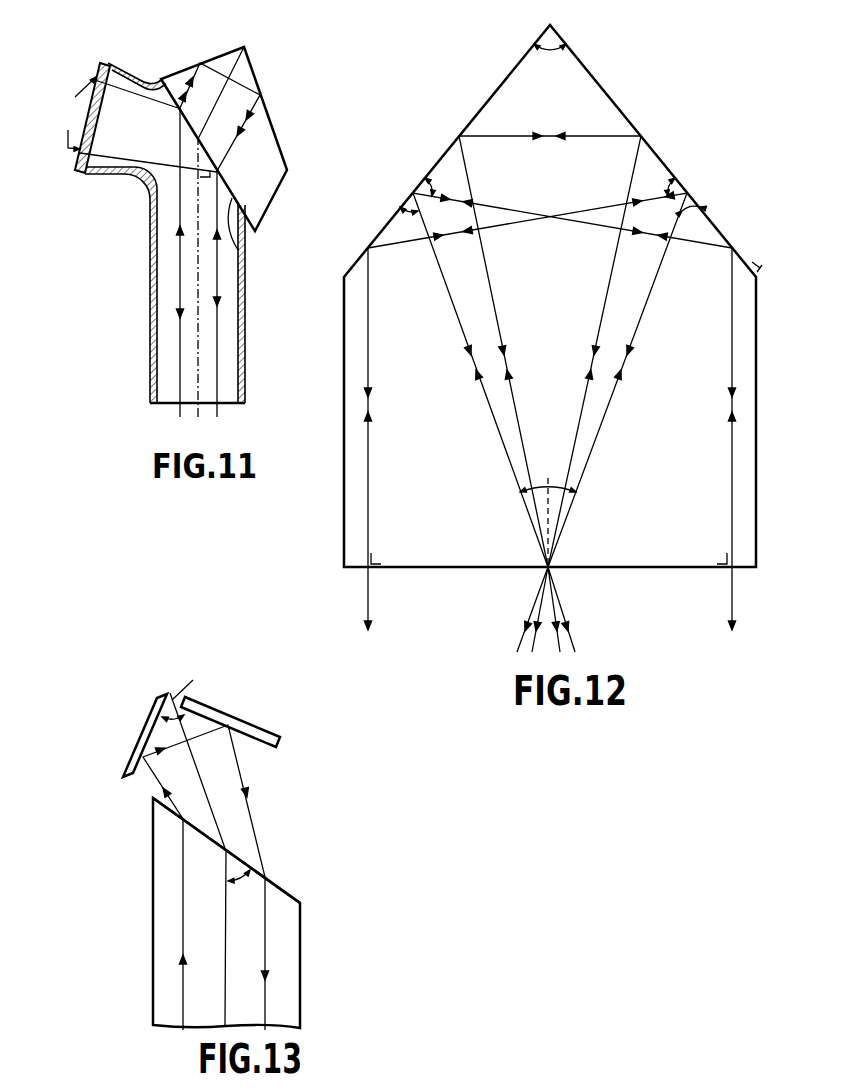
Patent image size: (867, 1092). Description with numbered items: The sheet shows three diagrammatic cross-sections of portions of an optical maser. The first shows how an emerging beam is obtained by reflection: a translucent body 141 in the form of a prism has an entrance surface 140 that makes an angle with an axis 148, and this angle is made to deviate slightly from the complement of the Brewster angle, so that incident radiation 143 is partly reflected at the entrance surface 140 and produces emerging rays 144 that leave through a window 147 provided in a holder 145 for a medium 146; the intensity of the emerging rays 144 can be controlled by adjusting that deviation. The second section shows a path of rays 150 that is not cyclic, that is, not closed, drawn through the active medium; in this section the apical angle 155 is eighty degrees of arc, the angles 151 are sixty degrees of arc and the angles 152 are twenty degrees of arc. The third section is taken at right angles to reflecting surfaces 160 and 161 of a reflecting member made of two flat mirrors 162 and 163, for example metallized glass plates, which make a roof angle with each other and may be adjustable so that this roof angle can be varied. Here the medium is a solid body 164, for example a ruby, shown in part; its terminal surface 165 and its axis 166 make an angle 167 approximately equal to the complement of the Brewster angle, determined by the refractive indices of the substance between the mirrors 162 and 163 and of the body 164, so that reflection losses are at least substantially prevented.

In FIG. 11, the entrance surface 140 is at (243, 242).
In FIG. 11, the translucent body 141 is at (273, 166).
In FIG. 11, the incident radiation 143 is at (178, 229).
In FIG. 11, the emerging rays 144 is at (75, 114).
In FIG. 11, the holder 145 is at (155, 329).
In FIG. 11, the medium 146 is at (168, 282).
In FIG. 11, the window 147 is at (102, 69).
In FIG. 11, the axis 148 is at (197, 357).
In FIG. 12, the path of rays 150 is at (732, 353).
In FIG. 12, the angles 151 is at (412, 213).
In FIG. 12, the angles 152 is at (556, 490).
In FIG. 12, the apical angle 155 is at (557, 33).
In FIG. 13, the reflecting surface 160 is at (137, 778).
In FIG. 13, the reflecting surface 161 is at (263, 744).
In FIG. 13, the mirror 162 is at (158, 712).
In FIG. 13, the mirror 163 is at (253, 725).
In FIG. 13, the solid body 164 is at (287, 953).
In FIG. 13, the terminal surface 165 is at (285, 893).
In FIG. 13, the axis 166 is at (225, 998).
In FIG. 13, the angle 167 is at (251, 870).